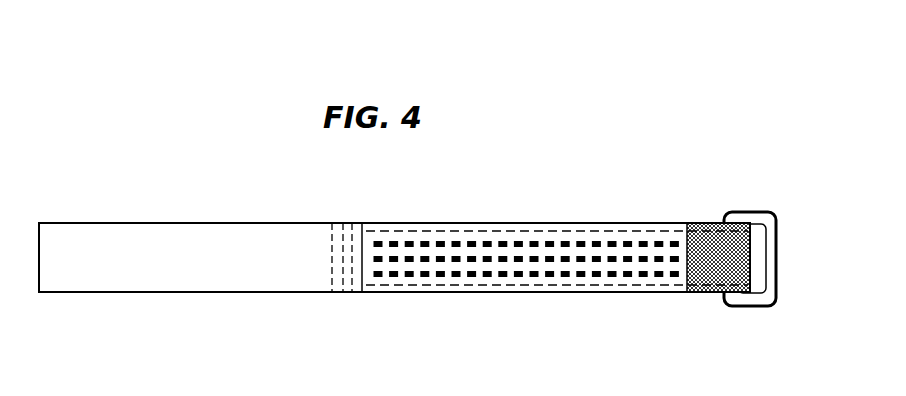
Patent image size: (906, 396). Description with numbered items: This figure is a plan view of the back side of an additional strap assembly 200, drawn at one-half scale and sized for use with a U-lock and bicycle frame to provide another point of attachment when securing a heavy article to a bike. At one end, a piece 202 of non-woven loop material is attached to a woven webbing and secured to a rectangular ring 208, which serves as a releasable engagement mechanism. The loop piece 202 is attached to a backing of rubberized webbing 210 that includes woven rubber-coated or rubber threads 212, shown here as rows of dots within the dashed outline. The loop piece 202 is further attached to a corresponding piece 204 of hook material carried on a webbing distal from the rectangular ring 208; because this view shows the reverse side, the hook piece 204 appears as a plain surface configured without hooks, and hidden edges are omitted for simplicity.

The additional strap assembly 200 is at (543, 168).
The piece of non-woven loop material 202 is at (707, 242).
The piece of hook material 204 is at (211, 235).
The rectangular ring 208 is at (752, 307).
The rubberized webbing 210 is at (533, 228).
The rubber threads 212 is at (427, 250).